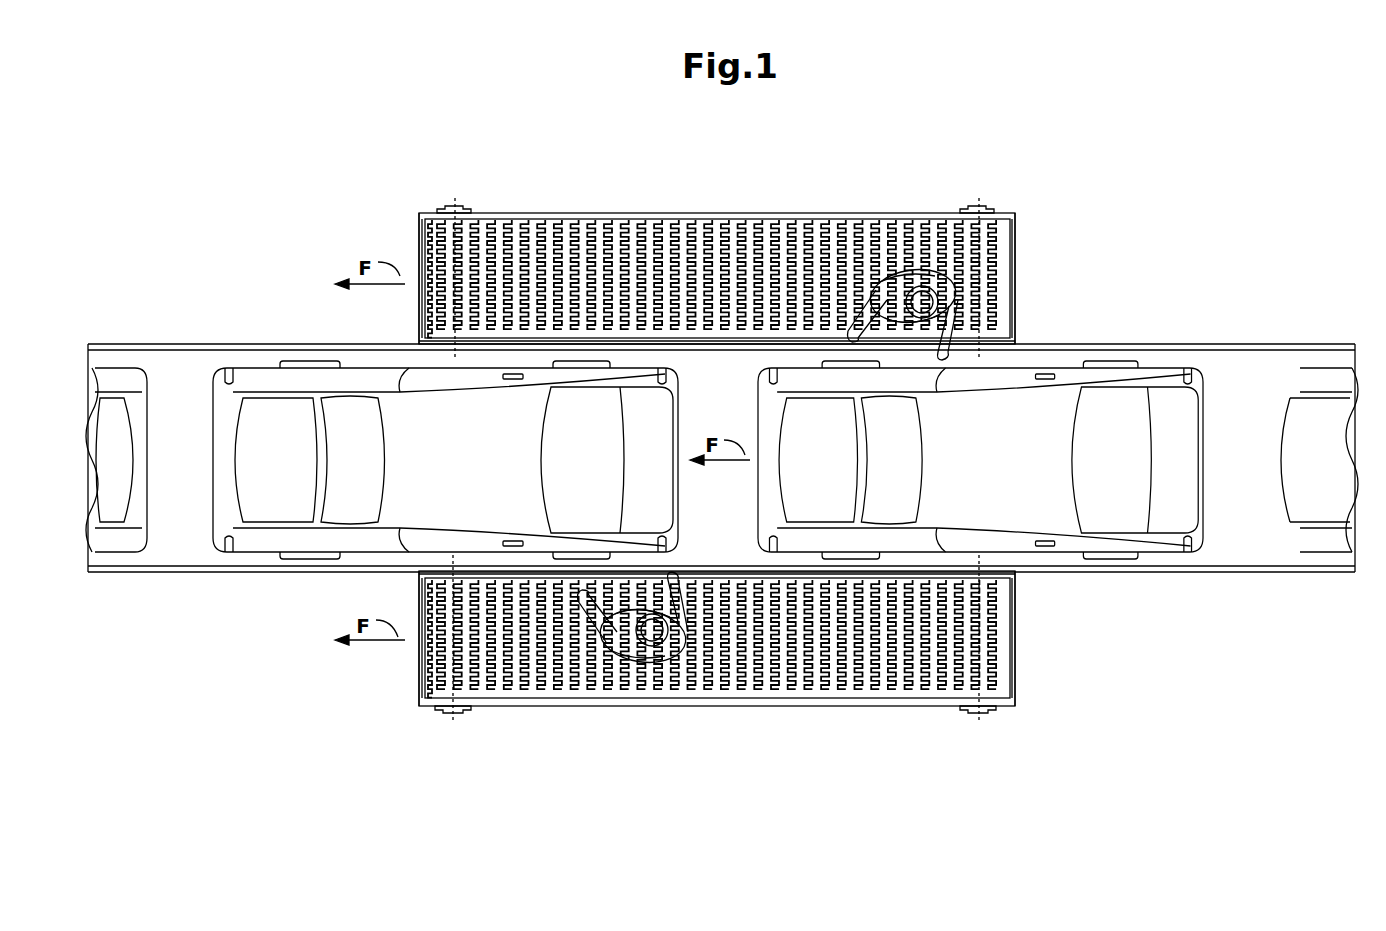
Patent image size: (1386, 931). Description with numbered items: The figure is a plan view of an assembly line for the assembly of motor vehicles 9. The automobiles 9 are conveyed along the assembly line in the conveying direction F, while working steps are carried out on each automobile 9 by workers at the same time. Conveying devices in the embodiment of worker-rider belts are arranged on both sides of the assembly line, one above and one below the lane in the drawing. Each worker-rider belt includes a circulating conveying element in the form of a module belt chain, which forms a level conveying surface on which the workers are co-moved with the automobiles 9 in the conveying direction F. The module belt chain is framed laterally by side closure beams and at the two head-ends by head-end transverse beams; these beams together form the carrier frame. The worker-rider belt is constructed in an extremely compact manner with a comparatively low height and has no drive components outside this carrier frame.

The motor vehicle 9 is at (303, 508).